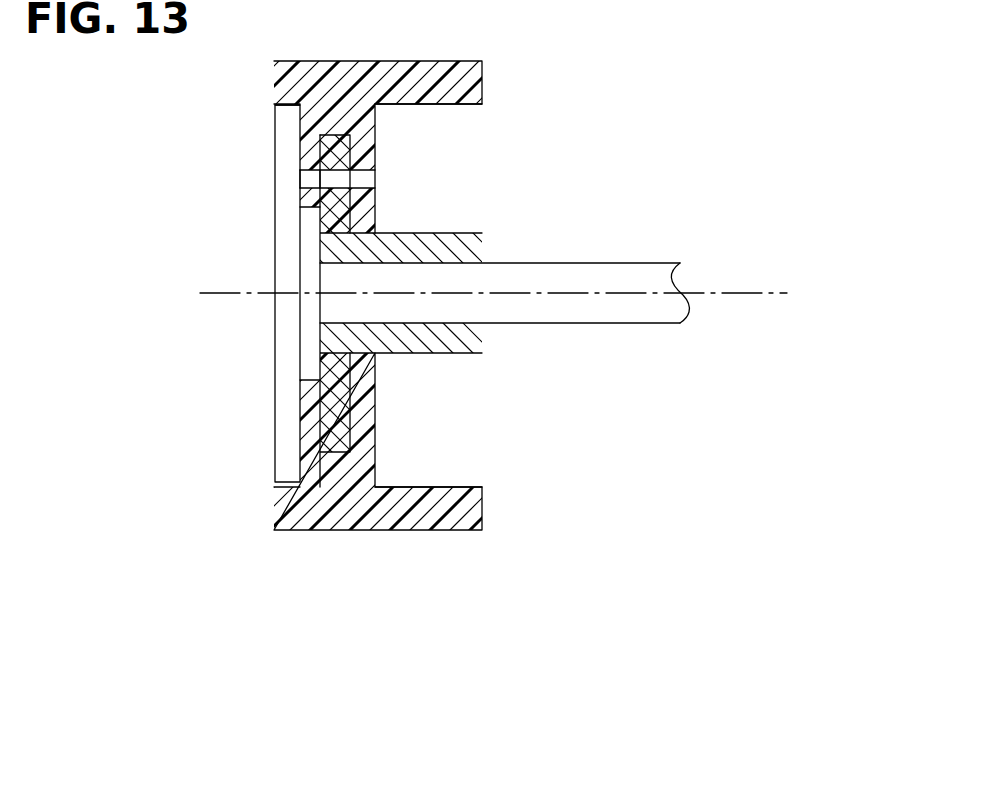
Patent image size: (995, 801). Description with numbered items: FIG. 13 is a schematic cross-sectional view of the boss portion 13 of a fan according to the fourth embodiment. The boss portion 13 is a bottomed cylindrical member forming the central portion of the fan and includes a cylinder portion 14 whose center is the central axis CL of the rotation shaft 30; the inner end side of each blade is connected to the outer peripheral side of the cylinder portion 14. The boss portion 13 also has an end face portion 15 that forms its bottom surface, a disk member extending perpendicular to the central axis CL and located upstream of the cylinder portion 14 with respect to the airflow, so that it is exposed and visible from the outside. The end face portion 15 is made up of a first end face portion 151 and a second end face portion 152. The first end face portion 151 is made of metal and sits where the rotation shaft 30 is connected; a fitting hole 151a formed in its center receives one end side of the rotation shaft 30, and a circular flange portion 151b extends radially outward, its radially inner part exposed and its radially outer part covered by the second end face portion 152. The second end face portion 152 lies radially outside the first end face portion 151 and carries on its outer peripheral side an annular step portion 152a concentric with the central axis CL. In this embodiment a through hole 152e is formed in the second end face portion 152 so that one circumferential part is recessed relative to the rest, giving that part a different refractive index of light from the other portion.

The boss portion 13 is at (239, 504).
The cylinder portion 14 is at (474, 502).
The end face portion 15 is at (171, 320).
The first end face portion 151 is at (318, 345).
The fitting hole 151a is at (478, 272).
The flange portion 151b is at (343, 156).
The second end face portion 152 is at (300, 392).
The step portion 152a is at (280, 107).
The through hole 152e is at (312, 181).
The rotation shaft 30 is at (669, 263).
The central axis CL is at (746, 292).